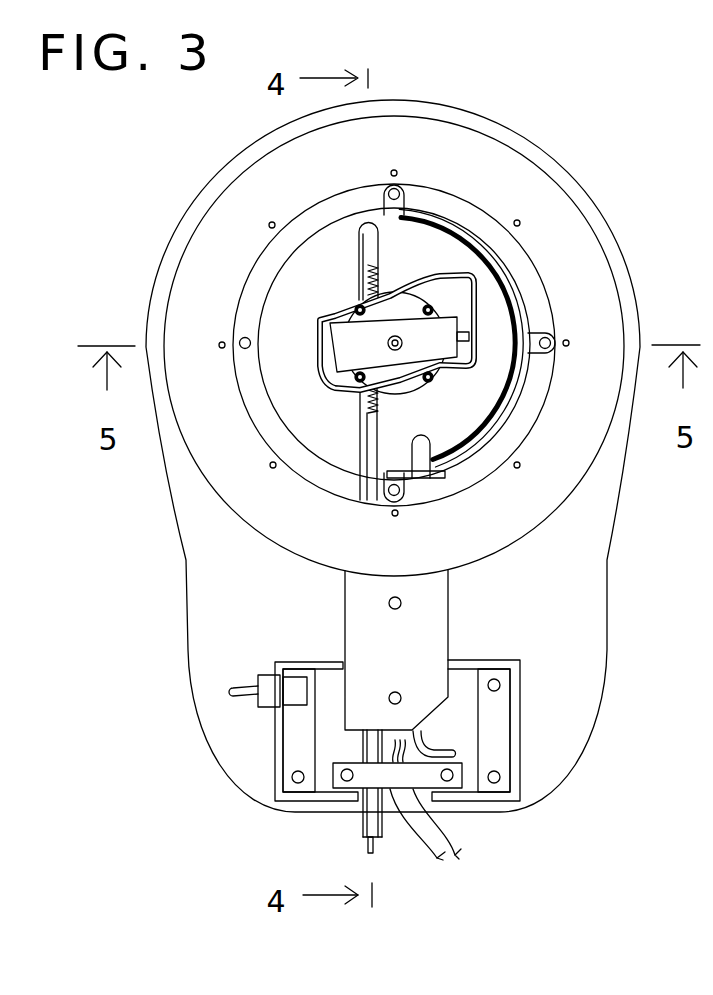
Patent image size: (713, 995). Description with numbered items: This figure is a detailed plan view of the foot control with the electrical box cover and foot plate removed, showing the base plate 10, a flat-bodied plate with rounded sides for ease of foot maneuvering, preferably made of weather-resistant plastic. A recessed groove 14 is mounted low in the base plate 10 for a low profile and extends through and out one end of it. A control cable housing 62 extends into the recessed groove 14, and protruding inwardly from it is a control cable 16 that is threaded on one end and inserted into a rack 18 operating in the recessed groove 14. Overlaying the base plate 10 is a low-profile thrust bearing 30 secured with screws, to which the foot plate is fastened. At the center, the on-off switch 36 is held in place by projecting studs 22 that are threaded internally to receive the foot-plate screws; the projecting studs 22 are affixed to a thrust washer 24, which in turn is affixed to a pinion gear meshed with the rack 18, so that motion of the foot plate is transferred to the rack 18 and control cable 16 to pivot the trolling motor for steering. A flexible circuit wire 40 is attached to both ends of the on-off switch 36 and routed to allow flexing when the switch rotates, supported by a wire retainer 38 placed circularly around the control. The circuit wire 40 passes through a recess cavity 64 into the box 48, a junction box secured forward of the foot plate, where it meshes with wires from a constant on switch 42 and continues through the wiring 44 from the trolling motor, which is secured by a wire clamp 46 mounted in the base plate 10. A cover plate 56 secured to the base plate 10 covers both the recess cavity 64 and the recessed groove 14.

The base plate 10 is at (573, 682).
The recessed groove 14 is at (378, 242).
The control cable 16 is at (368, 453).
The rack 18 is at (362, 273).
The projecting studs 22 is at (358, 310).
The thrust washer 24 is at (403, 385).
The thrust bearing 30 is at (508, 502).
The on-off switch 36 is at (430, 340).
The wire retainer 38 is at (383, 200).
The circuit wire 40 is at (468, 275).
The constant on switch 42 is at (267, 688).
The wiring from trolling motor 44 is at (423, 830).
The wire clamp 46 is at (457, 780).
The box 48 is at (487, 660).
The cover plate 56 is at (372, 632).
The control cable housing 62 is at (368, 820).
The recess cavity 64 is at (423, 443).